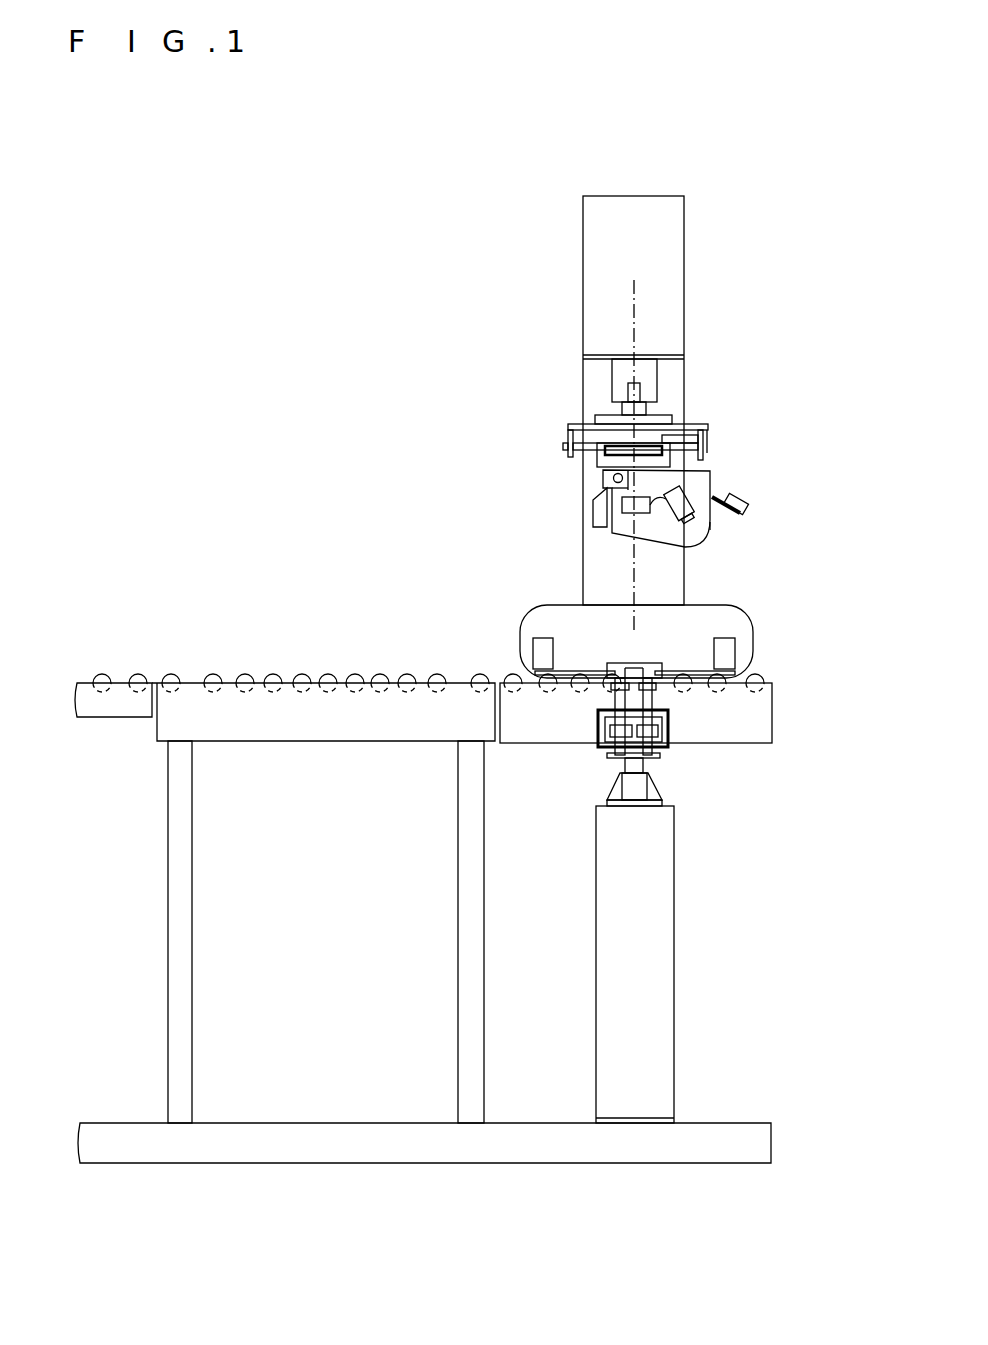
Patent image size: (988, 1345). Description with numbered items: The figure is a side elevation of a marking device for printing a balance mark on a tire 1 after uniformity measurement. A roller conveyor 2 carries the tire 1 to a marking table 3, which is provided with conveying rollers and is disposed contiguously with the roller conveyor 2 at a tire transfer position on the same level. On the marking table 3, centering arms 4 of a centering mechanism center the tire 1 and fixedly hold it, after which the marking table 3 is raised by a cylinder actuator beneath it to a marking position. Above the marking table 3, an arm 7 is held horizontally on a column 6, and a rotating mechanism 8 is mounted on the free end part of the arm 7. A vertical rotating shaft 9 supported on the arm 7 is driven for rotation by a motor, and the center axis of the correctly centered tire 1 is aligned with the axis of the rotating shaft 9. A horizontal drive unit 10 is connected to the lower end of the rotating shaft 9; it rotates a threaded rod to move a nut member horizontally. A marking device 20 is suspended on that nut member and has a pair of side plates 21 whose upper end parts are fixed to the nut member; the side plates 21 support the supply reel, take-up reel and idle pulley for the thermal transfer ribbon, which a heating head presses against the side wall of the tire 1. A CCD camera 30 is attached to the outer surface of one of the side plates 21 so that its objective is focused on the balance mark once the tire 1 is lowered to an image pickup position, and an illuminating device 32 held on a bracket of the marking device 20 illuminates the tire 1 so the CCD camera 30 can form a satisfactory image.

The tire 1 is at (523, 612).
The roller conveyor 2 is at (320, 662).
The marking table 3 is at (767, 673).
The centering arms 4 is at (580, 670).
The column 6 is at (686, 572).
The arm 7 is at (611, 377).
The rotating mechanism 8 is at (667, 372).
The rotating shaft 9 is at (639, 388).
The horizontal drive unit 10 is at (587, 460).
The marking device 20 is at (717, 483).
The side plates 21 is at (710, 530).
The CCD camera 30 is at (684, 492).
The illuminating device 32 is at (740, 499).